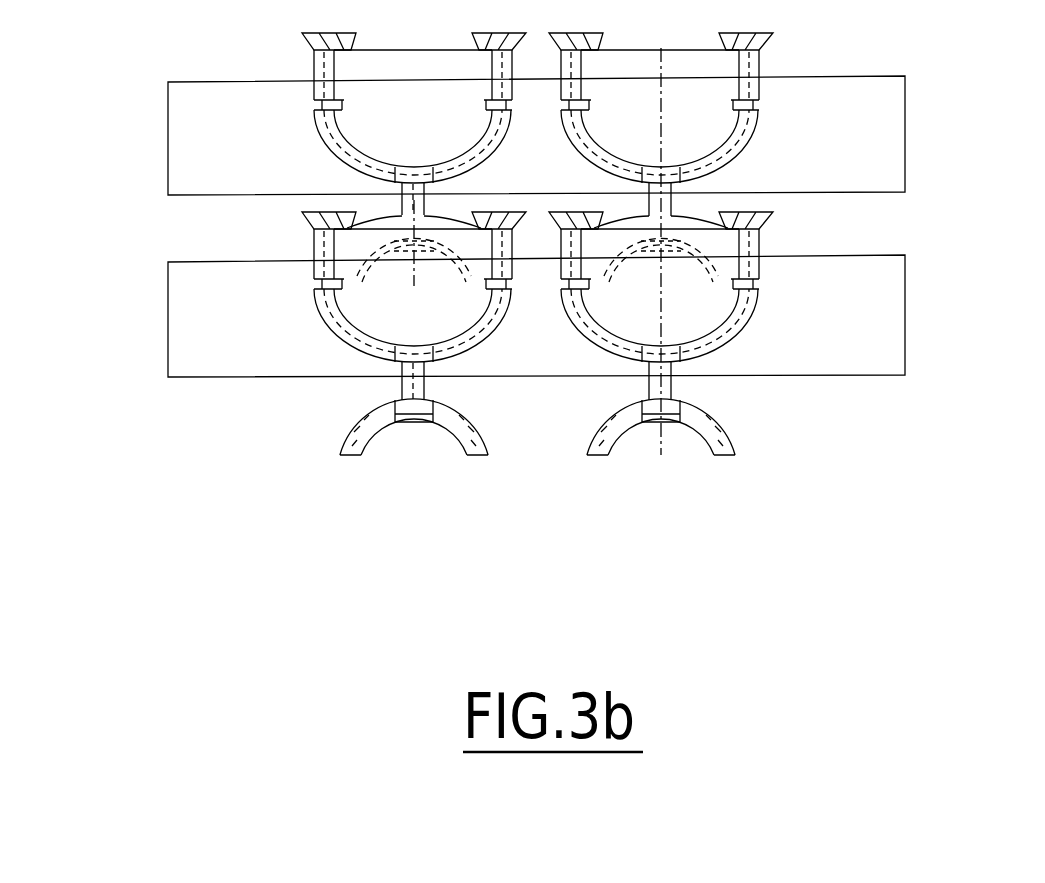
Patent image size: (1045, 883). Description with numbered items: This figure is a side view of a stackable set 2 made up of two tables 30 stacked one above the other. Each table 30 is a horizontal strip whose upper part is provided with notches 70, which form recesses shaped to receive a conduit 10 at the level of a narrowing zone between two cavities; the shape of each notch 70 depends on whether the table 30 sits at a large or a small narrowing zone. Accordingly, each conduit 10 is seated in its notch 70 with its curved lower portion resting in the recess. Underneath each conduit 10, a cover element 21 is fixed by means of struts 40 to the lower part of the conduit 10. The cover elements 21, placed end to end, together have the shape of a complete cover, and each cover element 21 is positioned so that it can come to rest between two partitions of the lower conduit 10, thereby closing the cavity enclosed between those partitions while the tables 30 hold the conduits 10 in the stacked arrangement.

The assembly of strips with cup-shaped elements 2 is at (475, 269).
The conduit 10 is at (525, 201).
The cover element 21 is at (463, 220).
The table 30 is at (218, 175).
The strut 40 is at (652, 206).
The notch 70 is at (346, 175).